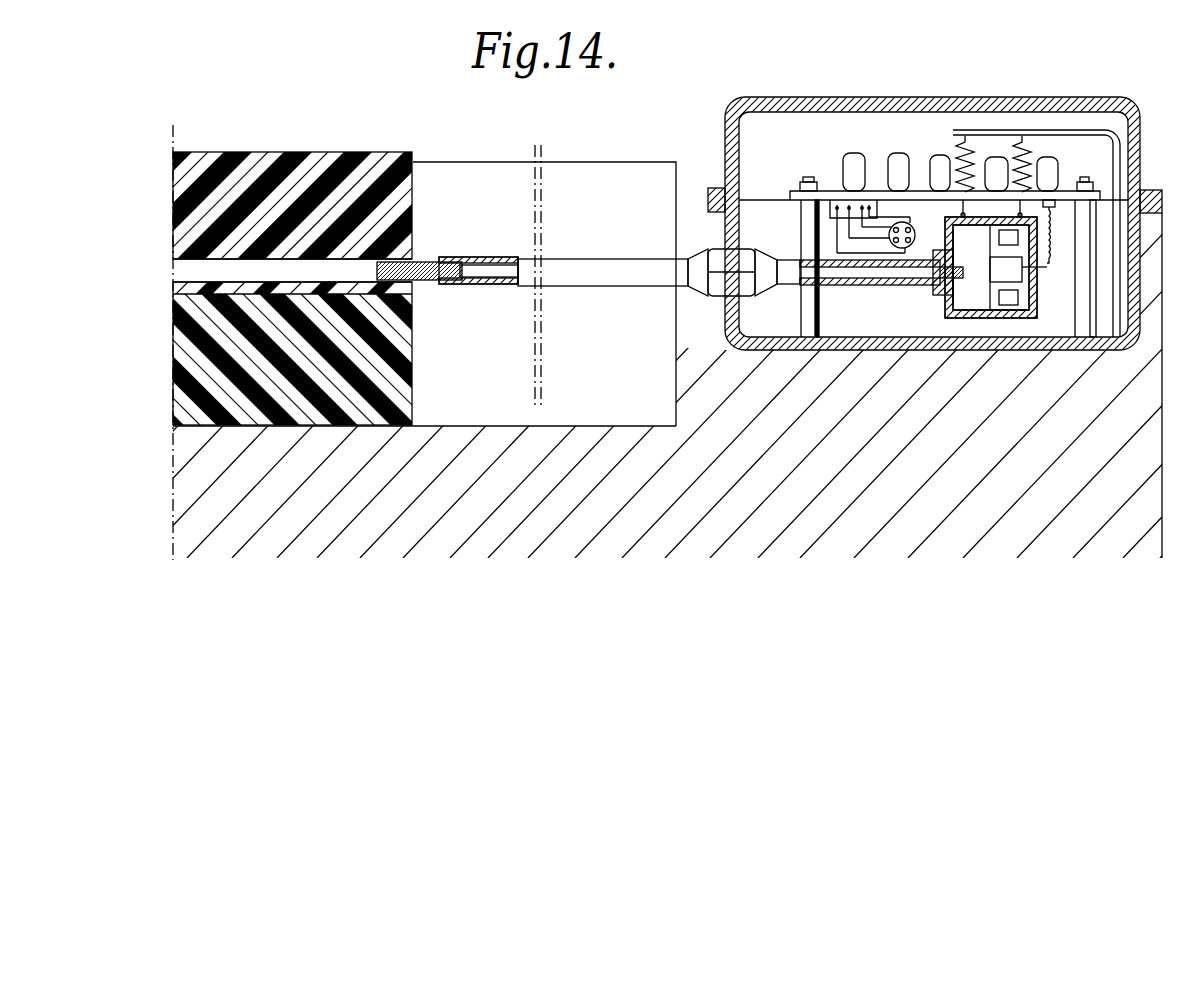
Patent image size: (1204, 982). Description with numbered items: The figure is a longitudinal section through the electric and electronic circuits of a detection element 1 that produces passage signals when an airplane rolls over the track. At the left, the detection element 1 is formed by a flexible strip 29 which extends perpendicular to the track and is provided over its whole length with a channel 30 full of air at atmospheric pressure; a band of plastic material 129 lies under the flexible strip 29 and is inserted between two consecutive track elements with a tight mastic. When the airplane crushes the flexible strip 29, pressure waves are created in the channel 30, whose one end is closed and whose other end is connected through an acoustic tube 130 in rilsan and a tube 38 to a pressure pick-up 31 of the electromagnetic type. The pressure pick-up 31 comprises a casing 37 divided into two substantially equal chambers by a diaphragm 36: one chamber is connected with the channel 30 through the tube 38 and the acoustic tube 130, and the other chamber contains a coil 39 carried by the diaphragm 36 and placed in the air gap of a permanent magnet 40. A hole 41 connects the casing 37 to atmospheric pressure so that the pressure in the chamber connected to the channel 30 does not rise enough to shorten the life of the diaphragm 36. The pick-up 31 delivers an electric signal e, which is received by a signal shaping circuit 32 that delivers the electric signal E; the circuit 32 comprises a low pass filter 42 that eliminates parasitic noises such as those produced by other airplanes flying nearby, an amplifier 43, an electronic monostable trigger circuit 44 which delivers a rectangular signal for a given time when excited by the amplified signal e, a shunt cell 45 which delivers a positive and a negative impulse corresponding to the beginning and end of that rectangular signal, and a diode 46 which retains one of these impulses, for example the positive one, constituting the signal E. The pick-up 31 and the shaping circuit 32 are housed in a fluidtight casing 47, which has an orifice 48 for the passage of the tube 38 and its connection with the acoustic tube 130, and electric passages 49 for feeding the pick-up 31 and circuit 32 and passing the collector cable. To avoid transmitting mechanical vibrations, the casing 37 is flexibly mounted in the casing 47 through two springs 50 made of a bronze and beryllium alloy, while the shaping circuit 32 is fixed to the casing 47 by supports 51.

The flexible strip 29 is at (303, 168).
The band of plastic material 129 is at (186, 337).
The channel 30 is at (190, 265).
The acoustic tube 130 is at (485, 270).
The detection element 1 is at (330, 458).
The orifice 48 is at (733, 266).
The tube 38 is at (900, 285).
The supports 51 is at (819, 318).
The low pass filter 42 is at (1063, 190).
The signal shaping circuit 32 is at (1090, 184).
The diode 46 is at (853, 155).
The shunt cell 45 is at (899, 157).
The electronic monostable trigger circuit 44 is at (940, 157).
The amplifier 43 is at (997, 160).
The springs 50 is at (967, 158).
The fluidtight casing 47 is at (1142, 226).
The electric signal E is at (845, 227).
The electric passages 49 is at (910, 232).
The pressure pick-up 31 is at (1009, 267).
The permanent magnet 40 is at (1008, 298).
The coil 39 is at (1017, 272).
The diaphragm 36 is at (991, 300).
The hole 41 is at (963, 316).
The casing 37 is at (1017, 317).
The electric signal e is at (1053, 237).